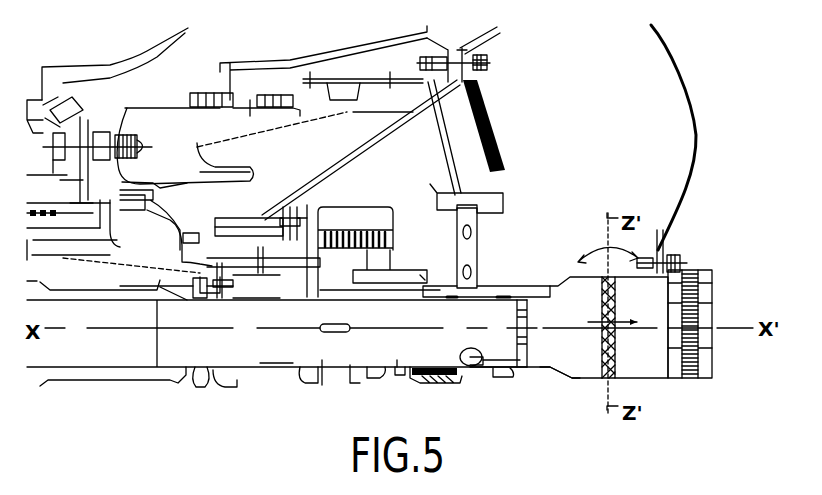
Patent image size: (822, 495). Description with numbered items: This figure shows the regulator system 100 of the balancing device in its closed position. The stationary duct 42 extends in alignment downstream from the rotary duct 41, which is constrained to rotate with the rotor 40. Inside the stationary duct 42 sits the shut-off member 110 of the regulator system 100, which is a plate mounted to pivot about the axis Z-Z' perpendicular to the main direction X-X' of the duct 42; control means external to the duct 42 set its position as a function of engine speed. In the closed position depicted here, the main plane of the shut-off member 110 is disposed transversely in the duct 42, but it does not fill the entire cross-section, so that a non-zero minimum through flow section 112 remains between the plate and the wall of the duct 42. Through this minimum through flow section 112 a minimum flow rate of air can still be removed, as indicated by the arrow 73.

The rotor 40 is at (394, 362).
The rotary duct 41 is at (478, 352).
The stationary duct 42 is at (553, 367).
The arrow 73 is at (618, 313).
The regulator system 100 is at (727, 283).
The shut-off member 110 is at (602, 346).
The minimum through flow section 112 is at (613, 330).